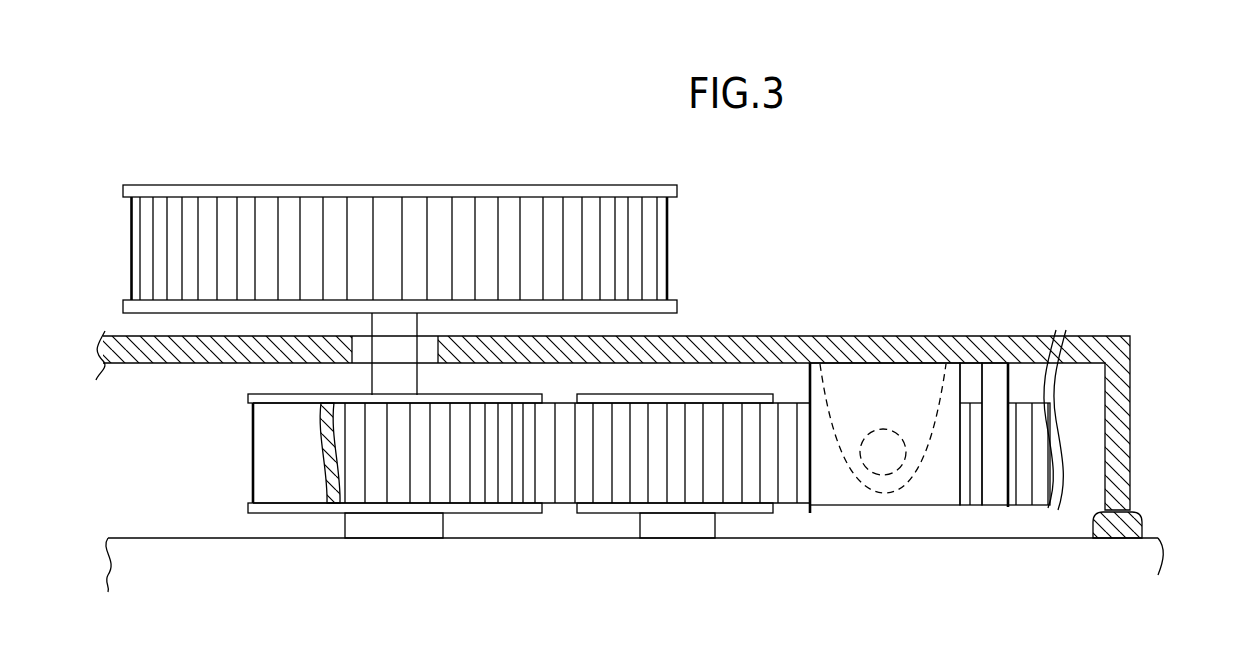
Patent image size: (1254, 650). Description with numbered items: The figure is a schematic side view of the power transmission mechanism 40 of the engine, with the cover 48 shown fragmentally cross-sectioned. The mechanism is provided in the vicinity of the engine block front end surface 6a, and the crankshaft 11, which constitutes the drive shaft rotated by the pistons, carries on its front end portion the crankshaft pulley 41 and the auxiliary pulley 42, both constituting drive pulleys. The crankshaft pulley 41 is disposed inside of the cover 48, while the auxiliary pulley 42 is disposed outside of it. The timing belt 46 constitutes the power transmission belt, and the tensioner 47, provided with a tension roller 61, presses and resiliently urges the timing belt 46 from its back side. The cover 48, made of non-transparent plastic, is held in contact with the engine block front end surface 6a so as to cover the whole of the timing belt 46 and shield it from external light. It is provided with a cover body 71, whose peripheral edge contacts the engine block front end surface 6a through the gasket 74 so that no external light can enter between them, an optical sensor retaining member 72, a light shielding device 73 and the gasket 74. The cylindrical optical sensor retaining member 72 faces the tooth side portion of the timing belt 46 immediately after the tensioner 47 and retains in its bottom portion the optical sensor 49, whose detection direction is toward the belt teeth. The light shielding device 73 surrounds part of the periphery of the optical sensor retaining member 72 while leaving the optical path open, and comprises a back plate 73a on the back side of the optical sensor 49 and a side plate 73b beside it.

The power transmission mechanism 40 is at (929, 150).
The engine block front end surface 6a is at (143, 526).
The auxiliary pulley 42 is at (533, 218).
The cover 48 is at (1109, 306).
The crankshaft pulley 41 is at (478, 495).
The crankshaft 11 is at (393, 526).
The timing belt 46 is at (790, 490).
The tensioner 47 is at (750, 395).
The tension roller 61 is at (675, 508).
The cover body 71 is at (882, 337).
The optical sensor retaining member 72 is at (923, 418).
The optical sensor 49 is at (891, 463).
The back plate 73a is at (950, 540).
The side plate 73b is at (997, 540).
The light shielding device 73 is at (1038, 613).
The gasket 74 is at (1145, 521).